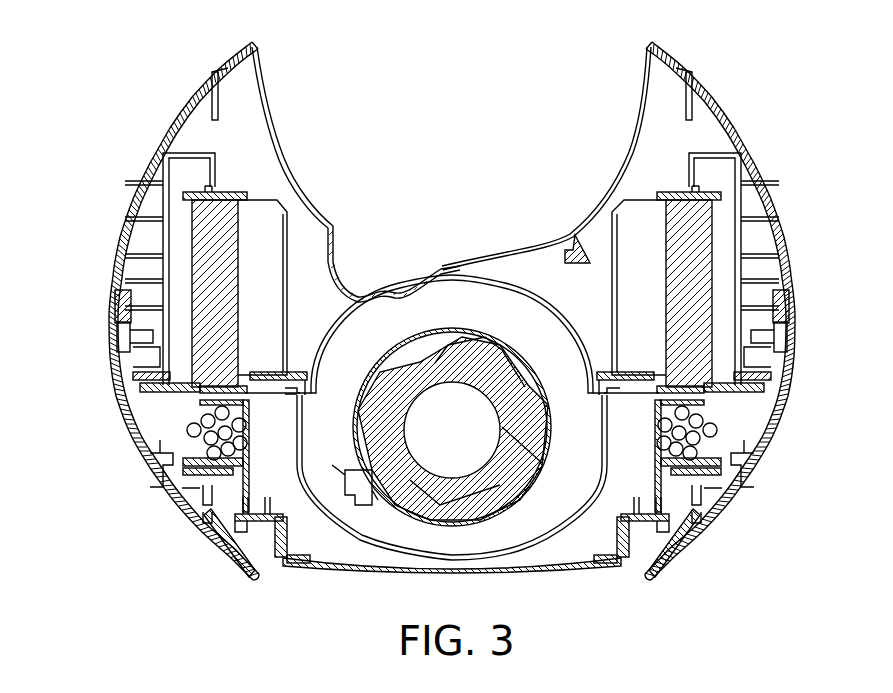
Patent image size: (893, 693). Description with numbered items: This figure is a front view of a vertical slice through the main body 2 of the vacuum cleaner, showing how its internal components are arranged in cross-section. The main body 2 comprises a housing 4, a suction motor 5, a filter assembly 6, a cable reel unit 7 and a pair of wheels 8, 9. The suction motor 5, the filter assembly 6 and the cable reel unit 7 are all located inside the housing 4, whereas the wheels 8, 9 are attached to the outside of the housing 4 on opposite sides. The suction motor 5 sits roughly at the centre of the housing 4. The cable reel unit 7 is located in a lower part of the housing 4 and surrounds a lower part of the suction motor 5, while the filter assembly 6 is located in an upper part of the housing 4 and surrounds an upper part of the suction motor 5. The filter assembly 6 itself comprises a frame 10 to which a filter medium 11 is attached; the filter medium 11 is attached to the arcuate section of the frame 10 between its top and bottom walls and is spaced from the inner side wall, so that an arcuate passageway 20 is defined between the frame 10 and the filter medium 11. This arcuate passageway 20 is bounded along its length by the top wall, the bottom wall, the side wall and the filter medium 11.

The main body 2 is at (766, 66).
The housing 4 is at (623, 167).
The suction motor 5 is at (520, 284).
The filter assembly 6 is at (712, 290).
The cable reel unit 7 is at (712, 423).
The wheel 8 is at (205, 546).
The wheel 9 is at (702, 545).
The frame 10 is at (300, 275).
The filter medium 11 is at (187, 245).
The arcuate passageway 20 is at (268, 228).